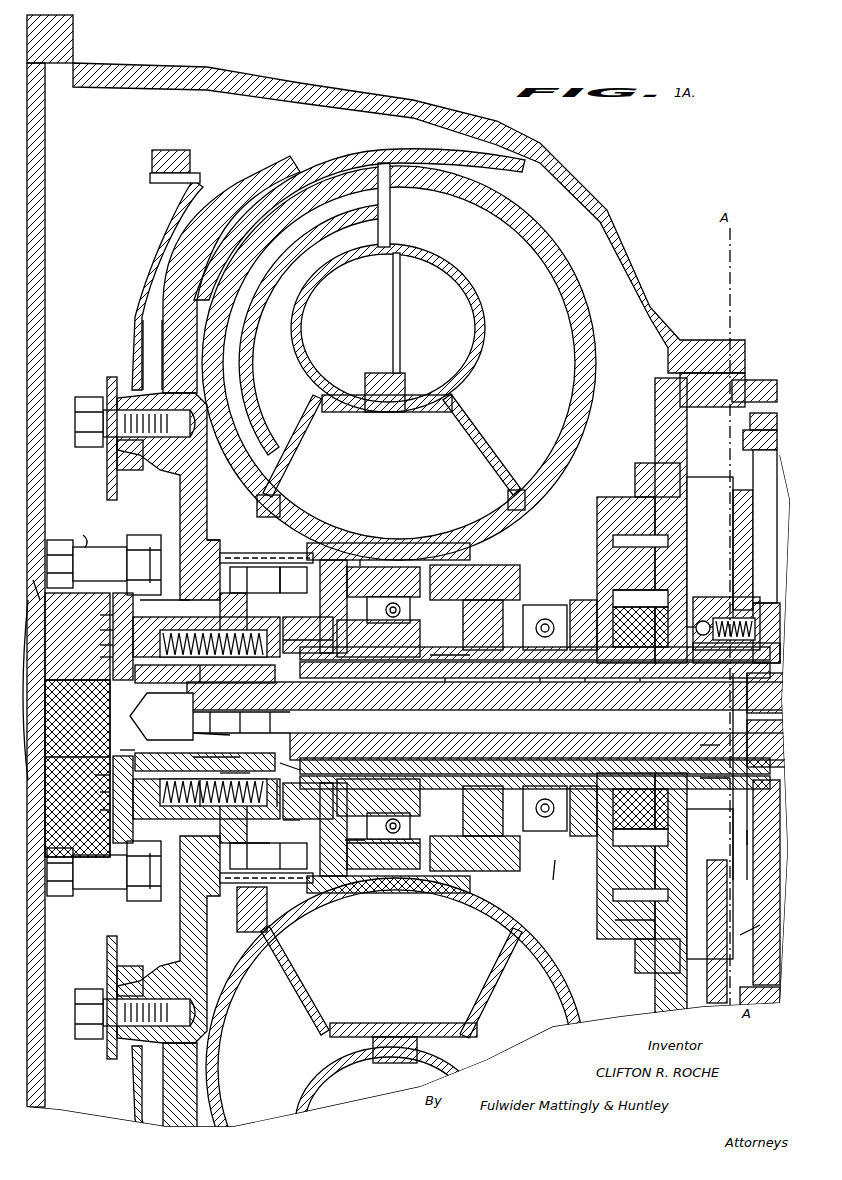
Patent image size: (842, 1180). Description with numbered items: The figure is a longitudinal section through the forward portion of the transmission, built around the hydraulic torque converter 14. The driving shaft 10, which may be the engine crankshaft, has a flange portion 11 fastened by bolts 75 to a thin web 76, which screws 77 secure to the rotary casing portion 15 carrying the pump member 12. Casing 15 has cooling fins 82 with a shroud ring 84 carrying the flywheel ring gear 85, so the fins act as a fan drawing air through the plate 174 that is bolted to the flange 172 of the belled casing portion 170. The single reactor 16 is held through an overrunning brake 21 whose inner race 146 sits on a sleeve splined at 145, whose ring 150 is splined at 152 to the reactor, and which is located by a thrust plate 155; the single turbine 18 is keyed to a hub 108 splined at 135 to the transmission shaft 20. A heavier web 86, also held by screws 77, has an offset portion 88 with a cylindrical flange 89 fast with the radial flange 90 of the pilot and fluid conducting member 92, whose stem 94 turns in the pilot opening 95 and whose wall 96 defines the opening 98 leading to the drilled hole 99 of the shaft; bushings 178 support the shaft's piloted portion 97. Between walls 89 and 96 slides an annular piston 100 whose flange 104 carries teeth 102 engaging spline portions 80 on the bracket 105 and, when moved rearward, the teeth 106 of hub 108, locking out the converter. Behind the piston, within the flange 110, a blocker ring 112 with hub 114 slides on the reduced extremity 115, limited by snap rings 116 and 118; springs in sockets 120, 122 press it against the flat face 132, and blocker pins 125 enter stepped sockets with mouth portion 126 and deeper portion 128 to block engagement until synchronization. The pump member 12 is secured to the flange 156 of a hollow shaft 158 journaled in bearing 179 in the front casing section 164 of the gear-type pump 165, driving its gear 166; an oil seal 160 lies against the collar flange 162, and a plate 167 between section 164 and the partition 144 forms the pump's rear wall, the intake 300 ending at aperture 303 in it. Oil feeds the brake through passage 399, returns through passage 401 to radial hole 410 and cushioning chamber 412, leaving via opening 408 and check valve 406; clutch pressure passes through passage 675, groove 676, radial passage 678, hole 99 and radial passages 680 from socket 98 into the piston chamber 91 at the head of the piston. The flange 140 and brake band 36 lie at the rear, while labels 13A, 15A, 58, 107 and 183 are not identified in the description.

The driving shaft 10 is at (40, 602).
The flange portion 11 is at (85, 535).
The pump member 12 is at (562, 256).
The clutch spring housing 13A is at (275, 545).
The hydraulic torque converter 14 is at (344, 141).
The casing portion 15 is at (270, 165).
The clutch plate 15A is at (333, 543).
The reactor portion 16 is at (436, 560).
The turbine portion 18 is at (243, 257).
The transmission shaft 20 is at (450, 755).
The overrunning brake 21 is at (400, 560).
The brake band 36 is at (757, 390).
The sleeve 58 is at (574, 688).
The bolts 75 is at (60, 545).
The sheet metal web 76 is at (117, 460).
The screws 77 is at (80, 402).
The spline portions 80 is at (266, 551).
The cooling fins 82 is at (143, 320).
The shroud ring 84 is at (160, 242).
The starting flywheel ring gear 85 is at (152, 140).
The sheet metal web 86 is at (113, 378).
The offset annular portion 88 is at (175, 478).
The cylindrical flange portion 89 is at (100, 613).
The radial flange 90 is at (100, 644).
The pump body portion 91 is at (100, 792).
The combined pilot bushing and fluid conducting member 92 is at (100, 656).
The piloted stem portion 94 is at (72, 721).
The axial pilot opening 95 is at (95, 776).
The cylindrical wall 96 is at (191, 735).
The front piloted portion 97 is at (204, 722).
The central opening 98 is at (158, 718).
The drilled hole 99 is at (350, 728).
The annular piston 100 is at (100, 629).
The clutch teeth 102 is at (113, 600).
The flange 104 is at (165, 598).
The annular bracket 105 is at (178, 540).
The clutch teeth 106 is at (282, 580).
The clutch member 107 is at (251, 834).
The hub 108 is at (320, 600).
The forwardly overhanging flange 110 is at (263, 603).
The blocker synchronizer ring 112 is at (306, 631).
The hub portion 114 is at (228, 763).
The reduced rear extremity 115 is at (233, 722).
The snap ring abutment 116 is at (283, 766).
The snap ring abutment 118 is at (194, 674).
The spring sockets 120 is at (205, 674).
The spring sockets 122 is at (300, 637).
The blocker pins 125 is at (256, 793).
The cylindrical mouth portion 126 is at (215, 793).
The deeper socket portion 128 is at (210, 761).
The flat front face 132 is at (352, 843).
The spline 135 is at (332, 660).
The flange 140 is at (292, 820).
The partitioning web 144 is at (760, 921).
The spline 145 is at (535, 680).
The inner race 146 is at (420, 637).
The ring 150 is at (383, 582).
The spline 152 is at (365, 543).
The side thrust plate 155 is at (443, 688).
The flange 156 is at (461, 647).
The hollow shaft 158 is at (475, 632).
The oil seal 160 is at (543, 605).
The collar flange portion 162 is at (578, 600).
The front casing section 164 is at (597, 502).
The hydraulic pump 165 is at (626, 485).
The pump driving gear 166 is at (652, 640).
The plate 167 is at (655, 400).
The belled casing portion 170 is at (378, 96).
The flange 172 is at (80, 35).
The plate 174 is at (45, 172).
The bushings 178 is at (263, 722).
The bearing 179 is at (563, 875).
The pump body portion 183 is at (100, 811).
The front pump intake 300 is at (621, 917).
The aperture 303 is at (740, 895).
The longitudinal passage 399 is at (638, 688).
The passage 401 is at (528, 688).
The check valve 406 is at (705, 620).
The opening 408 is at (660, 596).
The radial hole 410 is at (723, 671).
The cushioning chamber 412 is at (720, 506).
The passage 675 is at (761, 826).
The peripheral groove 676 is at (725, 779).
The radial passage 678 is at (712, 748).
The radial passages 680 is at (120, 749).